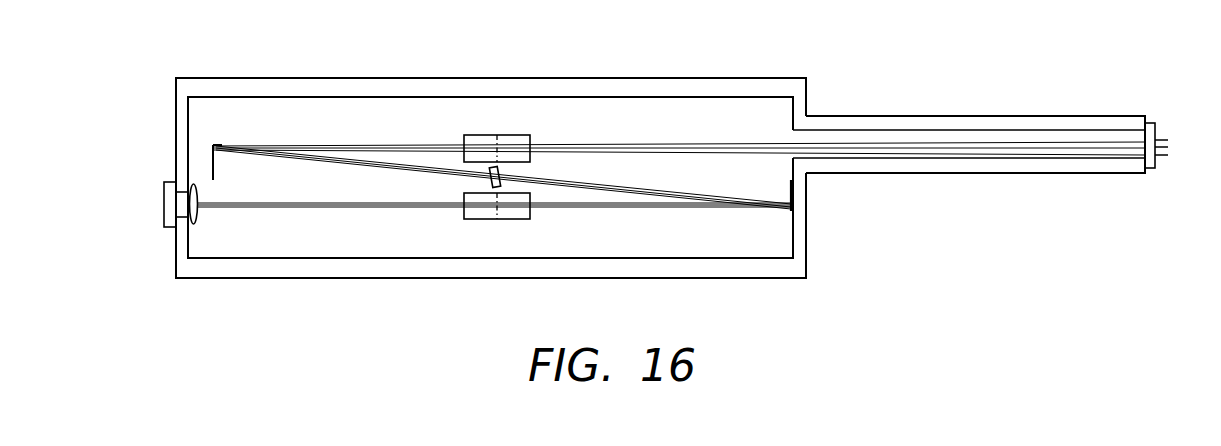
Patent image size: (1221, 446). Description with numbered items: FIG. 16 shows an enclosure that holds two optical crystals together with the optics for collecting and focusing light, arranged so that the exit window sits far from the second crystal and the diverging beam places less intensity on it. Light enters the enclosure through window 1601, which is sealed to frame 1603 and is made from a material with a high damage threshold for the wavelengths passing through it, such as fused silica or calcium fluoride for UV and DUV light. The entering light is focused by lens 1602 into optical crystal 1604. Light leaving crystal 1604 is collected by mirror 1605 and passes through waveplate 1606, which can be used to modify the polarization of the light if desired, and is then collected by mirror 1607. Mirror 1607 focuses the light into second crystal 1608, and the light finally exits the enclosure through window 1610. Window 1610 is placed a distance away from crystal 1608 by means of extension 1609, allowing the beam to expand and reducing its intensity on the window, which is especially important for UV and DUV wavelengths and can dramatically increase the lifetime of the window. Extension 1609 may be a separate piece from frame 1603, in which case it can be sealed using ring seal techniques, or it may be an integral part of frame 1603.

The window 1601 is at (164, 208).
The lens 1602 is at (194, 225).
The frame 1603 is at (338, 279).
The optical crystal 1604 is at (510, 220).
The mirror 1605 is at (793, 196).
The waveplate 1606 is at (500, 187).
The mirror 1607 is at (213, 160).
The second crystal 1608 is at (483, 133).
The extension 1609 is at (980, 122).
The window 1610 is at (1150, 118).